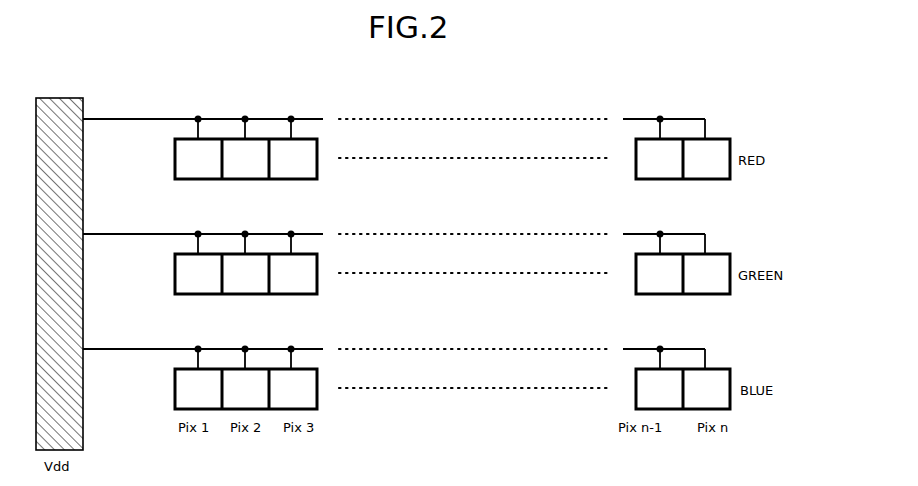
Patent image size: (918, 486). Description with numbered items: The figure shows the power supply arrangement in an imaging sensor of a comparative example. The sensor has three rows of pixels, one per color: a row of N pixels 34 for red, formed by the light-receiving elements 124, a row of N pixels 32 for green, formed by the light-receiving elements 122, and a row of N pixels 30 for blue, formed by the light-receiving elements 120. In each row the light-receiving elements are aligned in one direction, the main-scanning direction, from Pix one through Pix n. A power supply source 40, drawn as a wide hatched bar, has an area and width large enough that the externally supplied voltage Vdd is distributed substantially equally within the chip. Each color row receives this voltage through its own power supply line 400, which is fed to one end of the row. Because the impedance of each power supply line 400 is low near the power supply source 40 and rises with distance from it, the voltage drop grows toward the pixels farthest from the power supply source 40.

The power supply source 40 is at (60, 84).
The power supply lines 400 is at (116, 117).
The pixels for R 34 is at (175, 162).
The light-receiving elements for R 124 is at (423, 148).
The pixels for G 32 is at (175, 277).
The light-receiving elements for G 122 is at (423, 263).
The pixels for B 30 is at (175, 392).
The light-receiving elements for B 120 is at (423, 378).